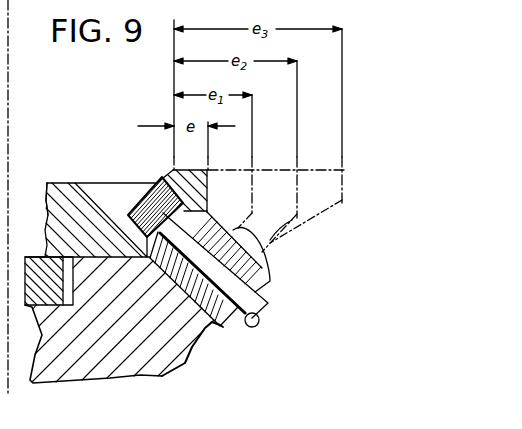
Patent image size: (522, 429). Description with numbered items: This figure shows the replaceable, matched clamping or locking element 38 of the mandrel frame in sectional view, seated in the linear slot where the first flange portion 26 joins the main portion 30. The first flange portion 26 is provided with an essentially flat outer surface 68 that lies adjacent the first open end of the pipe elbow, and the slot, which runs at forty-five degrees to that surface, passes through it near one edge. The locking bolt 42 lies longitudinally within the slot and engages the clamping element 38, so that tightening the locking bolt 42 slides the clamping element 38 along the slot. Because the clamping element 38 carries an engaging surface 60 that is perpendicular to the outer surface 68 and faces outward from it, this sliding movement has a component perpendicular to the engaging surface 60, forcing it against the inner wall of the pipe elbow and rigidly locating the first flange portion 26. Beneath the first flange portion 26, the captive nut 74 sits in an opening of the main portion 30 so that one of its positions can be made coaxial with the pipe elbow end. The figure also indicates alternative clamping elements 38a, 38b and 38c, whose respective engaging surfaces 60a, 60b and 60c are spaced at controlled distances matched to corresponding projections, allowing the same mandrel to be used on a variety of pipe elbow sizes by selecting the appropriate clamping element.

The first flange portion 26 is at (47, 200).
The outer surface 68 is at (60, 182).
The captive nut 74 is at (33, 308).
The main portion 30 is at (75, 370).
The clamping element 38 is at (202, 311).
The locking bolt 42 is at (238, 332).
The engaging surface 60 is at (208, 195).
The engaging surface 60a is at (251, 181).
The engaging surface 60b is at (297, 183).
The engaging surface 60c is at (342, 182).
The clamping element 38a is at (270, 272).
The clamping element 38b is at (295, 248).
The clamping element 38c is at (305, 228).